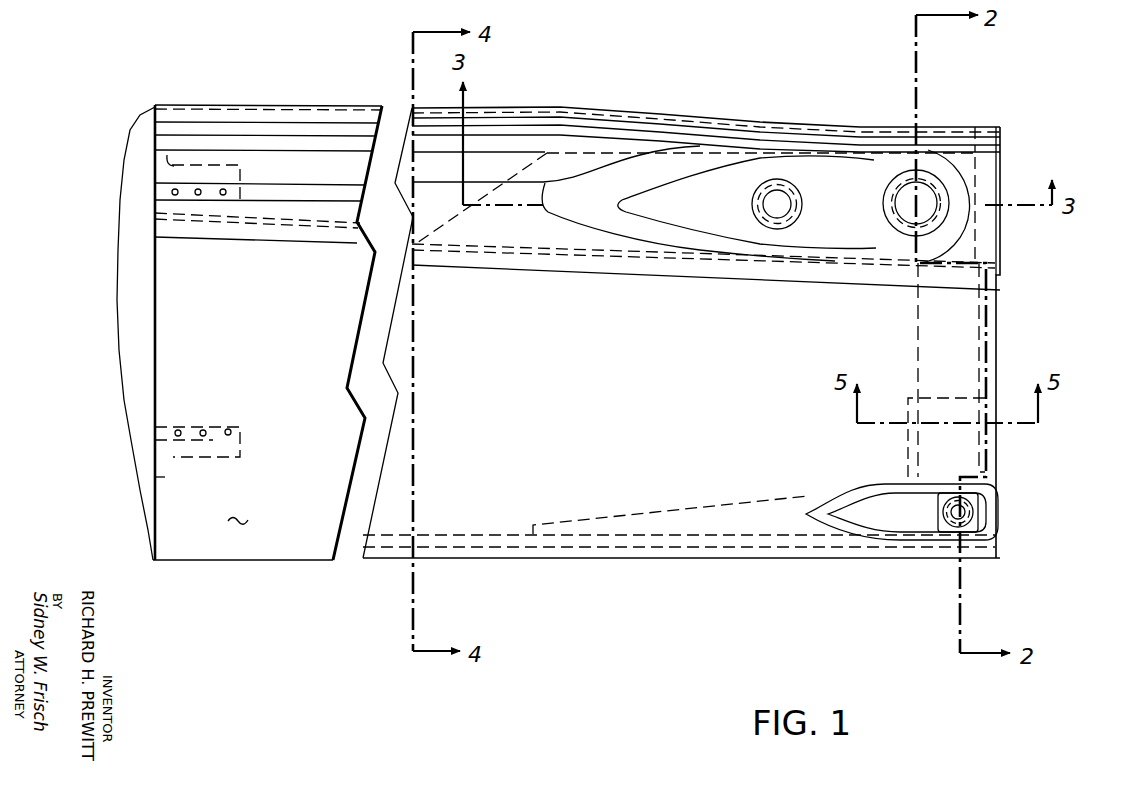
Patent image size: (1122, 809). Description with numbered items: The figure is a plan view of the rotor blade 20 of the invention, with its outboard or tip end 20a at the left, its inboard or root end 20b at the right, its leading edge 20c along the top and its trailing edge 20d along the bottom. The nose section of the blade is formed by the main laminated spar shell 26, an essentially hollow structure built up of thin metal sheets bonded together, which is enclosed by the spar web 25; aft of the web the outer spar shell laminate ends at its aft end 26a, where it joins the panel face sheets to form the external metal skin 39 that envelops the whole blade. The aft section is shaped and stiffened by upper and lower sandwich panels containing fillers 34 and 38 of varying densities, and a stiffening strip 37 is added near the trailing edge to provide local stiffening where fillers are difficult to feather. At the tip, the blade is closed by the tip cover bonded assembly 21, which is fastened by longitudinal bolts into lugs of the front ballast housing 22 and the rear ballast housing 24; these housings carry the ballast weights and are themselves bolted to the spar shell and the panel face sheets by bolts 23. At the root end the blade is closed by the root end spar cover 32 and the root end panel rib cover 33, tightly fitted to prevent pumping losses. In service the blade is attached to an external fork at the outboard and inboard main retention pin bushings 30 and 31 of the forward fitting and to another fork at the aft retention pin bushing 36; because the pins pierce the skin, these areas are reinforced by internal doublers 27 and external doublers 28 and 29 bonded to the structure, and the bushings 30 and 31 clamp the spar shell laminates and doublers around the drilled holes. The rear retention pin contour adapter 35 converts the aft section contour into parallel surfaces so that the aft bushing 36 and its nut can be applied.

The rotor blade 20 is at (625, 563).
The outboard or tip end 20a is at (152, 318).
The inboard or root end 20b is at (1000, 326).
The leading edge 20c is at (588, 108).
The trailing edge 20d is at (298, 561).
The tip cover bonded assembly 21 is at (118, 225).
The front ballast housing 22 is at (182, 165).
The bolts 23 is at (224, 191).
The rear ballast housing 24 is at (167, 427).
The spar web 25 is at (330, 222).
The main laminated spar shell 26 is at (497, 105).
The aft end of outer spar shell laminate 26a is at (443, 266).
The internal doublers 27 is at (637, 153).
The external doublers 28 is at (855, 528).
The external doublers 29 is at (807, 258).
The outboard main retention pin bushing 30 is at (793, 186).
The inboard main retention pin bushing 31 is at (942, 182).
The root end spar cover 32 is at (1001, 157).
The root end panel rib cover 33 is at (980, 372).
The filler 34 is at (920, 406).
The rear retention pin contour adapter 35 is at (978, 500).
The aft retention pin bushing 36 is at (977, 533).
The stiffening strip 37 is at (775, 548).
The filler 38 is at (718, 506).
The external metal skin 39 is at (233, 527).